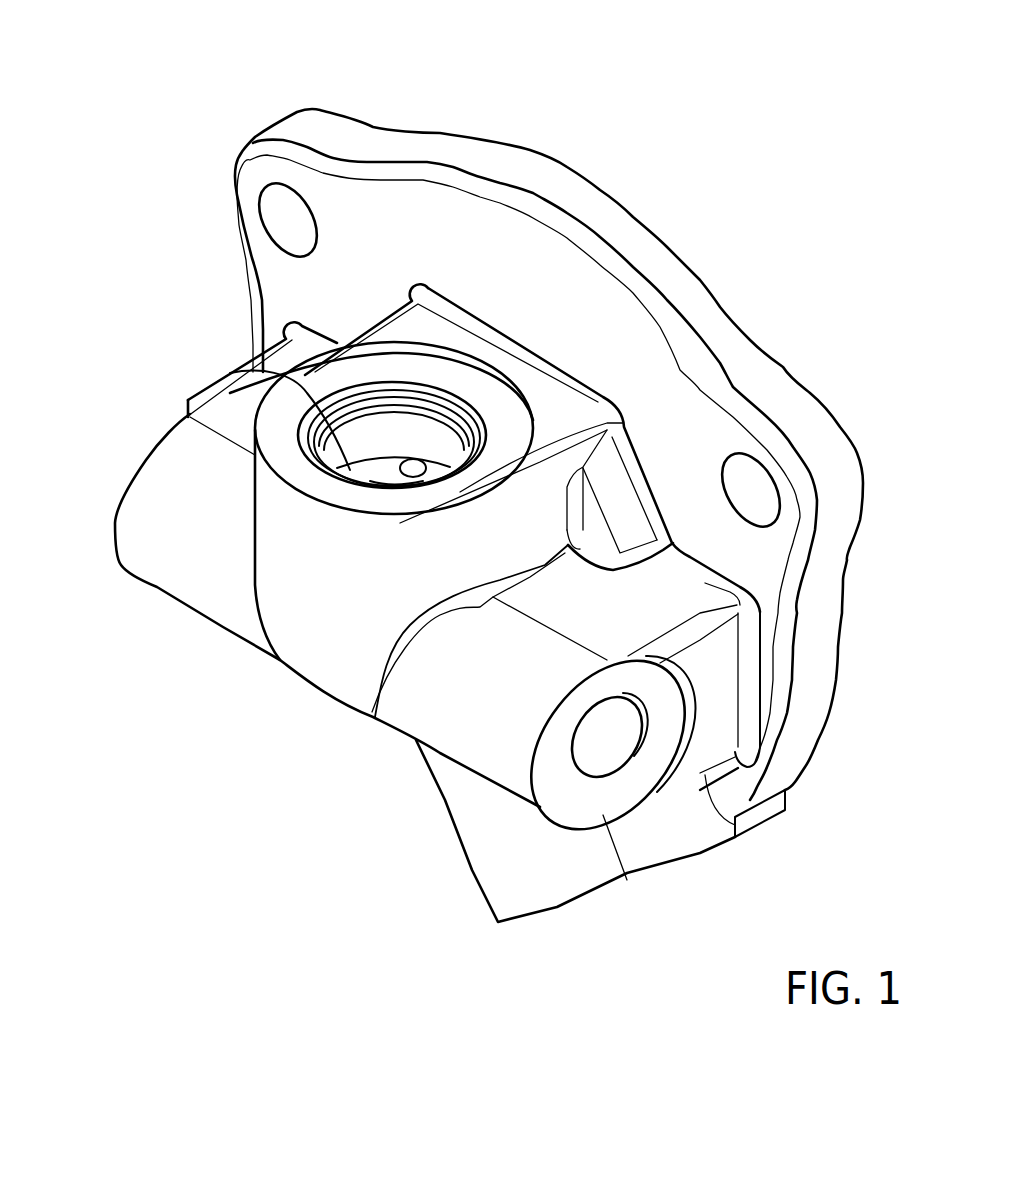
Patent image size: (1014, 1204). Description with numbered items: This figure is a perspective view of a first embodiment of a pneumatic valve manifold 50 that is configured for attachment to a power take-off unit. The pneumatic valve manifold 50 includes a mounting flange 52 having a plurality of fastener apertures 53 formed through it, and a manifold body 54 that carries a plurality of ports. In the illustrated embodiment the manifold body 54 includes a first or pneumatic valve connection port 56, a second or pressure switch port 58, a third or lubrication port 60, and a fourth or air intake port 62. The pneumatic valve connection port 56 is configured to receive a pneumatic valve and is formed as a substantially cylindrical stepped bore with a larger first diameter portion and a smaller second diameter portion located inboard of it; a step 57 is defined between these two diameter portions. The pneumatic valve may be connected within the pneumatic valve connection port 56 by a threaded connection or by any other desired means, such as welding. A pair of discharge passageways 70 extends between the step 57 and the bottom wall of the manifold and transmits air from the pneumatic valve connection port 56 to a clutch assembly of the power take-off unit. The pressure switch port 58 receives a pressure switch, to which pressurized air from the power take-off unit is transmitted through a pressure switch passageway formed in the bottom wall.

The pneumatic valve manifold 50 is at (173, 44).
The mounting flange 52 is at (630, 238).
The fastener apertures 53 is at (268, 230).
The manifold body 54 is at (322, 672).
The pneumatic valve connection port 56 is at (400, 417).
The step 57 is at (305, 375).
The pressure switch port 58 is at (612, 764).
The lubrication port 60 is at (559, 908).
The air intake port 62 is at (123, 490).
The discharge passageways 70 is at (188, 401).